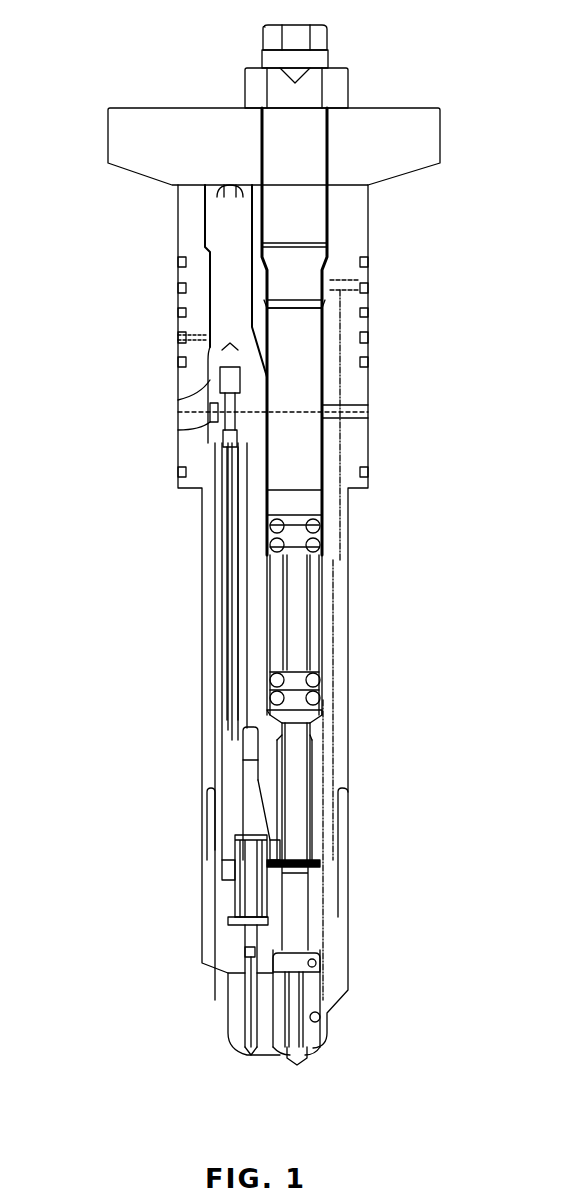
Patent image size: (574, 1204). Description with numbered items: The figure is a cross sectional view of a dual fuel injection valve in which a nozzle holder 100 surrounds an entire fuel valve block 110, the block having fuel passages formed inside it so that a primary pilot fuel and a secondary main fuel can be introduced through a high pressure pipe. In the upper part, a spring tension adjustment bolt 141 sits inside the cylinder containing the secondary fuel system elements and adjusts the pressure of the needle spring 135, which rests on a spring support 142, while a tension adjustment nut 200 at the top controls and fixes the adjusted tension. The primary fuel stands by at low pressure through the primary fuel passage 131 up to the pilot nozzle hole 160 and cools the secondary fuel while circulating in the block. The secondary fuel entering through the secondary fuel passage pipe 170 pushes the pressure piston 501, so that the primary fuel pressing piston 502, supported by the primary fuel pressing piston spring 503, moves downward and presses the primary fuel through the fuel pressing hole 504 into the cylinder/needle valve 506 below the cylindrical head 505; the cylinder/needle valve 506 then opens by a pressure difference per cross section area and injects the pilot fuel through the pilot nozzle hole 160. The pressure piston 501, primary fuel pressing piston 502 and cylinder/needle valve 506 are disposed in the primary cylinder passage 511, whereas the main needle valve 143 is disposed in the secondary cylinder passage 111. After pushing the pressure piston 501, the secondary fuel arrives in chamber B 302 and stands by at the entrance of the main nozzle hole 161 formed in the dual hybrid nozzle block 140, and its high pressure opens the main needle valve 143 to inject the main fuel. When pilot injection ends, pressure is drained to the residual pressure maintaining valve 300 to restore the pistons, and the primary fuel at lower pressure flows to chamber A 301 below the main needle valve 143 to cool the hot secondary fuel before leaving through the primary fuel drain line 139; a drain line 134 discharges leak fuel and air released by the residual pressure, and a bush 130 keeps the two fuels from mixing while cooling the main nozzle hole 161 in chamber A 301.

The nozzle holder 100 is at (348, 863).
The fuel valve block 110 is at (340, 738).
The secondary cylinder passage 111 is at (310, 893).
The bush 130 is at (308, 990).
The primary fuel passage 131 is at (178, 337).
The drain line 134 is at (368, 413).
The needle spring 135 is at (322, 530).
The primary fuel drain line 139 is at (370, 287).
The dual hybrid nozzle block 140 is at (323, 1007).
The spring tension adjustment bolt 141 is at (305, 380).
The spring support 142 is at (304, 748).
The main needle valve 143 is at (302, 908).
The pilot nozzle hole 160 is at (250, 1055).
The main nozzle hole 161 is at (305, 1055).
The secondary fuel passage pipe 170 is at (217, 412).
The tension adjustment nut 200 is at (348, 88).
The residual pressure maintaining valve 300 is at (222, 388).
The chamber A 301 is at (313, 1018).
The chamber B 302 is at (315, 963).
The pressure piston 501 is at (250, 738).
The primary fuel pressing piston 502 is at (278, 852).
The primary fuel pressing piston spring 503 is at (235, 853).
The fuel pressing hole 504 is at (237, 895).
The cylindrical head 505 is at (243, 935).
The cylinder/needle valve 506 is at (245, 968).
The primary cylinder passage 511 is at (240, 922).